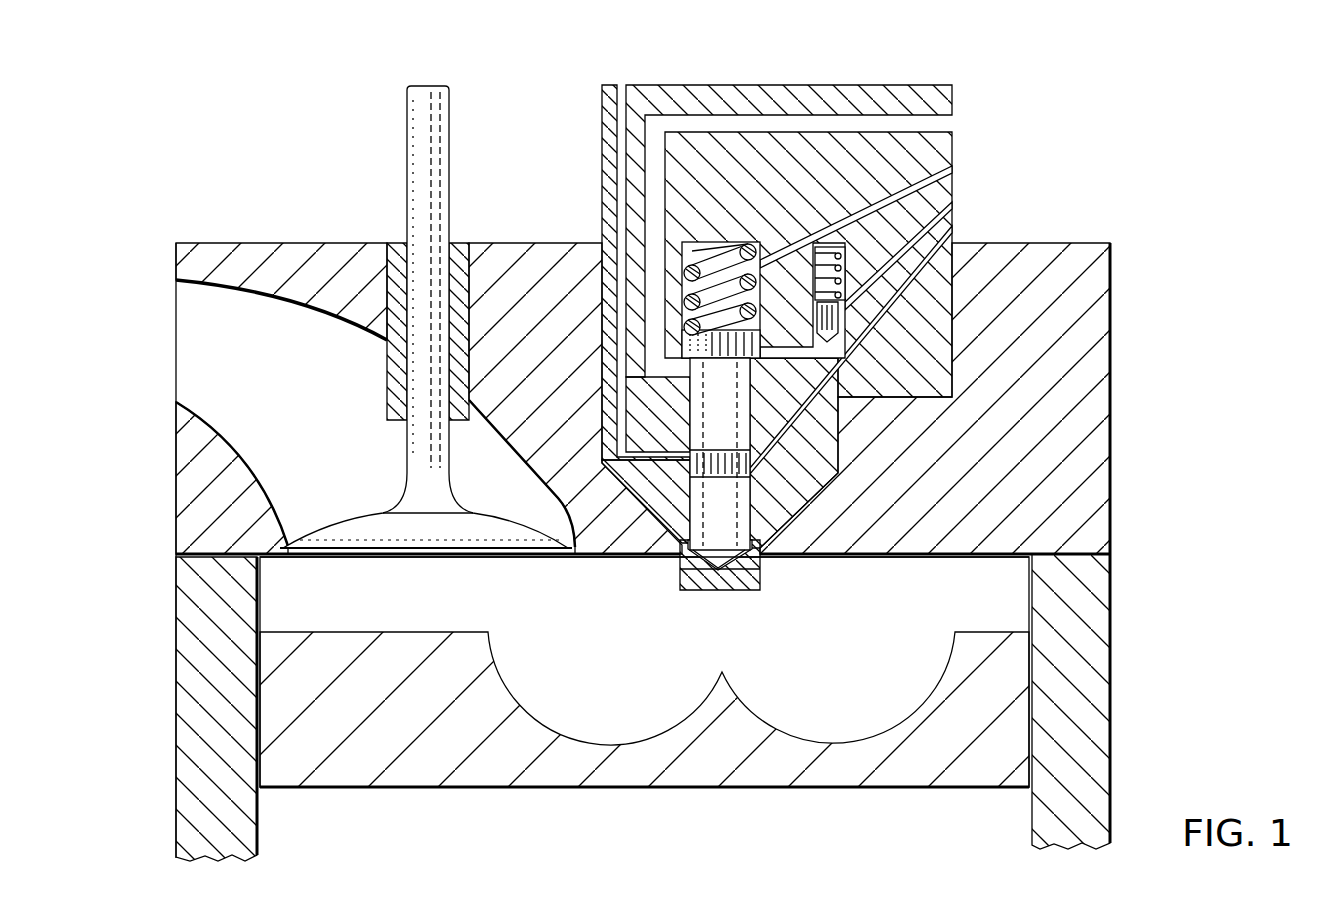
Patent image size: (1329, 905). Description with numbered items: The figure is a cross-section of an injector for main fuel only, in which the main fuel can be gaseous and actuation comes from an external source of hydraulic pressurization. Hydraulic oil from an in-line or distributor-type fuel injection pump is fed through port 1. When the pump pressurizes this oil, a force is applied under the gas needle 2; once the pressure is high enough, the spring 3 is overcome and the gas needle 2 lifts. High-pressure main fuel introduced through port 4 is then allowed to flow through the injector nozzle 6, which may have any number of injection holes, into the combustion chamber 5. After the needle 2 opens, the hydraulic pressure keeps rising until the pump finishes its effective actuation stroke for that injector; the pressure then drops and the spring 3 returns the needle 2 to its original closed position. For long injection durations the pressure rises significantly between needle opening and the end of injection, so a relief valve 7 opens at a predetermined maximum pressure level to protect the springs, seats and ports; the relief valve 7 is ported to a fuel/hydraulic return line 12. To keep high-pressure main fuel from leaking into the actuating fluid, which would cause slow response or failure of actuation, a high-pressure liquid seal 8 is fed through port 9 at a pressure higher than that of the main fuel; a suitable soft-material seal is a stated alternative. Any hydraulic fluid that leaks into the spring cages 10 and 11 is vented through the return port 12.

The port 1 is at (950, 123).
The gas needle 2 is at (752, 414).
The spring 3 is at (733, 252).
The port 4 is at (950, 228).
The combustion chamber 5 is at (831, 714).
The injector nozzle 6 is at (676, 575).
The relief valve 7 is at (848, 318).
The high-pressure liquid seal 8 is at (706, 450).
The port 9 is at (619, 82).
The spring cage 10 is at (708, 246).
The spring cage 11 is at (851, 246).
The fuel/hydraulic return line 12 is at (952, 171).